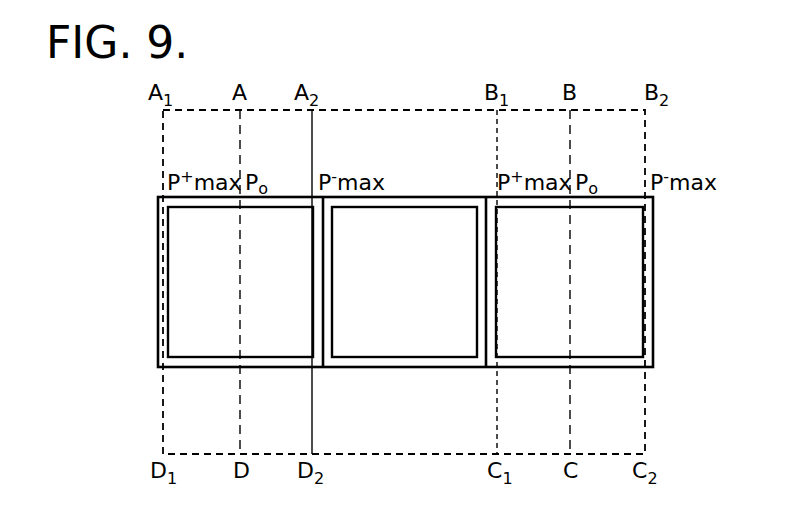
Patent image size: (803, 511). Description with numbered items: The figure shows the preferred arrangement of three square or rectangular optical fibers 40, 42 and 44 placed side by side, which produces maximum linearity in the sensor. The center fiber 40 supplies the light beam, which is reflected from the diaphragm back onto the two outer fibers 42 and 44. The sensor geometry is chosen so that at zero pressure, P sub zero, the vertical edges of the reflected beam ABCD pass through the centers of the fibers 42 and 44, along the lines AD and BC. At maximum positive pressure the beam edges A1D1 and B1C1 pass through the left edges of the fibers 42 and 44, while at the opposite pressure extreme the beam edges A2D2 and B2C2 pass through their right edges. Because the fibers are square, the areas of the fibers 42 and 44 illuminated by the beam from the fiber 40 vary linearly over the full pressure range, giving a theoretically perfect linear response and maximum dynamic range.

The square optical fiber 40 is at (400, 197).
The square optical fiber 42 is at (236, 197).
The square optical fiber 44 is at (567, 197).